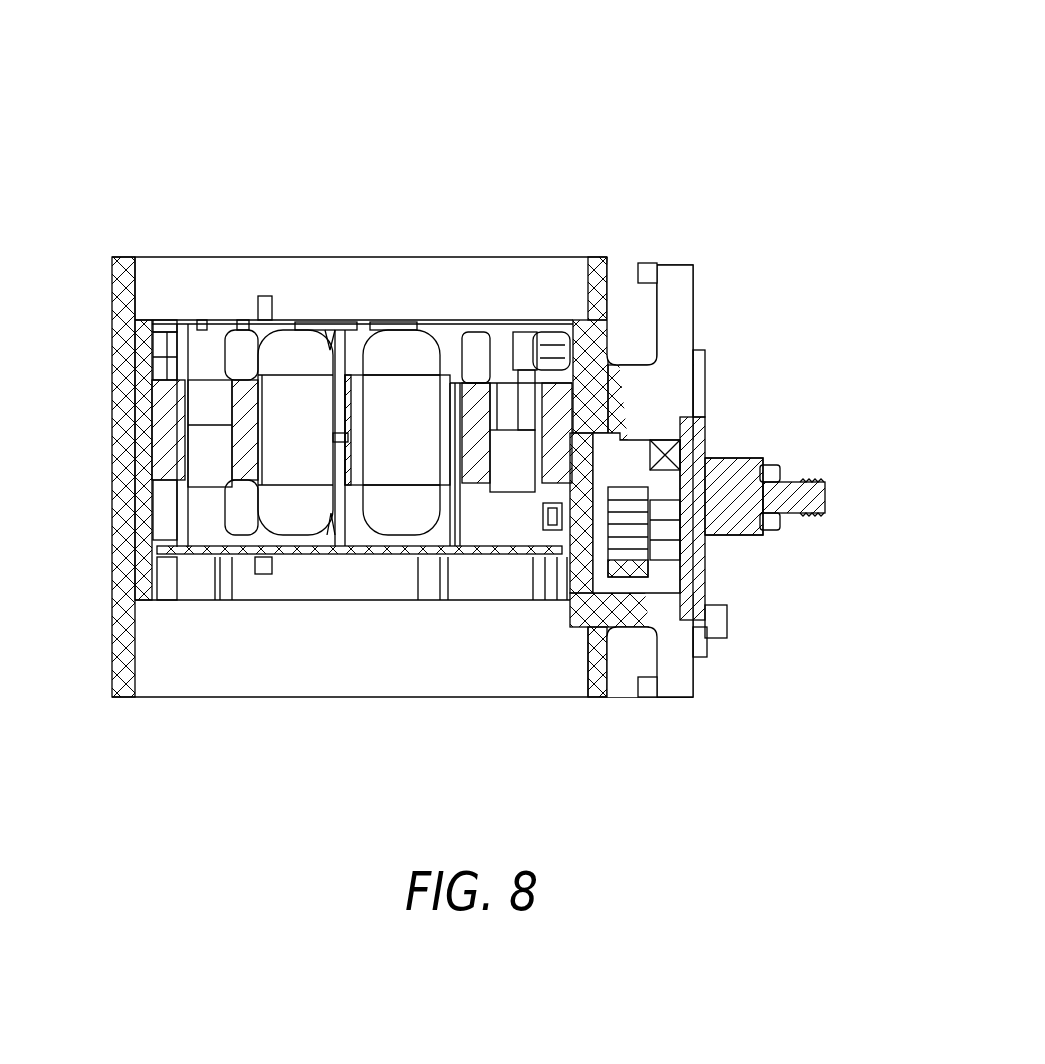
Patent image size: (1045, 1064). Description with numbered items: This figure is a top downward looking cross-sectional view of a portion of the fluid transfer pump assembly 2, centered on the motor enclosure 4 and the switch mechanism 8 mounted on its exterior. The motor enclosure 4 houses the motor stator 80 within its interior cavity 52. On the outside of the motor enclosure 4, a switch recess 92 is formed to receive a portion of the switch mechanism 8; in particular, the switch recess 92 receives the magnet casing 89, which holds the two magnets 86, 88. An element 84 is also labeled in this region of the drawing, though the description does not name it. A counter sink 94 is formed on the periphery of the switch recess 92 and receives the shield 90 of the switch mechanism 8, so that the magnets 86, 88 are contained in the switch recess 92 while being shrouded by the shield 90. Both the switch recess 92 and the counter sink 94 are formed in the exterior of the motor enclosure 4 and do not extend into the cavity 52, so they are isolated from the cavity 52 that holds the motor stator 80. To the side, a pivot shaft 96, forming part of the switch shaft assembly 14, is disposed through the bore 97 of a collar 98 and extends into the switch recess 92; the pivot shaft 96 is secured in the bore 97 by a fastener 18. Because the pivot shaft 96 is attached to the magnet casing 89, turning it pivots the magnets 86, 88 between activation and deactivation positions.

The fluid transfer pump assembly 2 is at (795, 136).
The motor enclosure 4 is at (112, 293).
The switch mechanism 8 is at (774, 594).
The switch shaft assembly 14 is at (776, 412).
The fastener 18 is at (780, 522).
The cavity 52 is at (231, 650).
The motor stator 80 is at (380, 346).
The seal carrier 84 is at (544, 560).
The magnet 86 is at (627, 580).
The magnet 88 is at (608, 505).
The magnet casing 89 is at (603, 557).
The shield 90 is at (705, 588).
The switch recess 92 is at (617, 452).
The counter sink 94 is at (705, 418).
The pivot shaft 96 is at (812, 499).
The bore 97 is at (740, 525).
The collar 98 is at (748, 466).